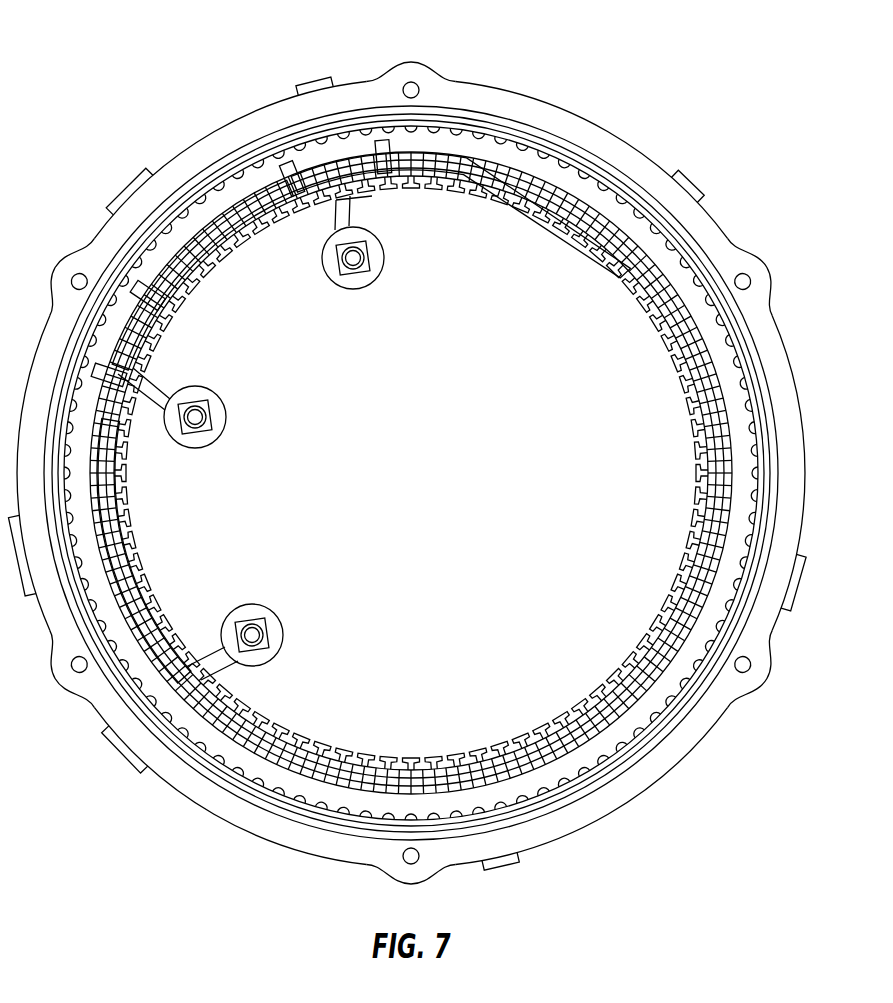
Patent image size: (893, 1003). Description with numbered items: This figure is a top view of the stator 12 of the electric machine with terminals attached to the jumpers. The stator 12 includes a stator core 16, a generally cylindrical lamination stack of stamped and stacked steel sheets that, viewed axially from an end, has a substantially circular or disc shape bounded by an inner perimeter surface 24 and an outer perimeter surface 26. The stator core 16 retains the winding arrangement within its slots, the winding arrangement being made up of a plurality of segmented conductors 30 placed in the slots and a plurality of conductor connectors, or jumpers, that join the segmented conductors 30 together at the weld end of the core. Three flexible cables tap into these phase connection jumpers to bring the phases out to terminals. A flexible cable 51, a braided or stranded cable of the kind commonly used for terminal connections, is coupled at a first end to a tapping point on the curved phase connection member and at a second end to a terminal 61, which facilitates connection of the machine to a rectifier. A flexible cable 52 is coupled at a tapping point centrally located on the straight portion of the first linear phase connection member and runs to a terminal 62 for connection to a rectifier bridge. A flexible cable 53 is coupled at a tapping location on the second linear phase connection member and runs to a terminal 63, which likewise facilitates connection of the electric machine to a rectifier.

The stator 12 is at (226, 93).
The stator core 16 is at (521, 106).
The outer perimeter surface 26 is at (600, 124).
The inner perimeter surface 24 is at (679, 394).
The segmented conductors 30 is at (477, 755).
The flexible cable 51 is at (123, 557).
The flexible cable 52 is at (464, 206).
The flexible cable 53 is at (152, 347).
The terminal 61 is at (280, 648).
The terminal 62 is at (381, 270).
The terminal 63 is at (223, 412).